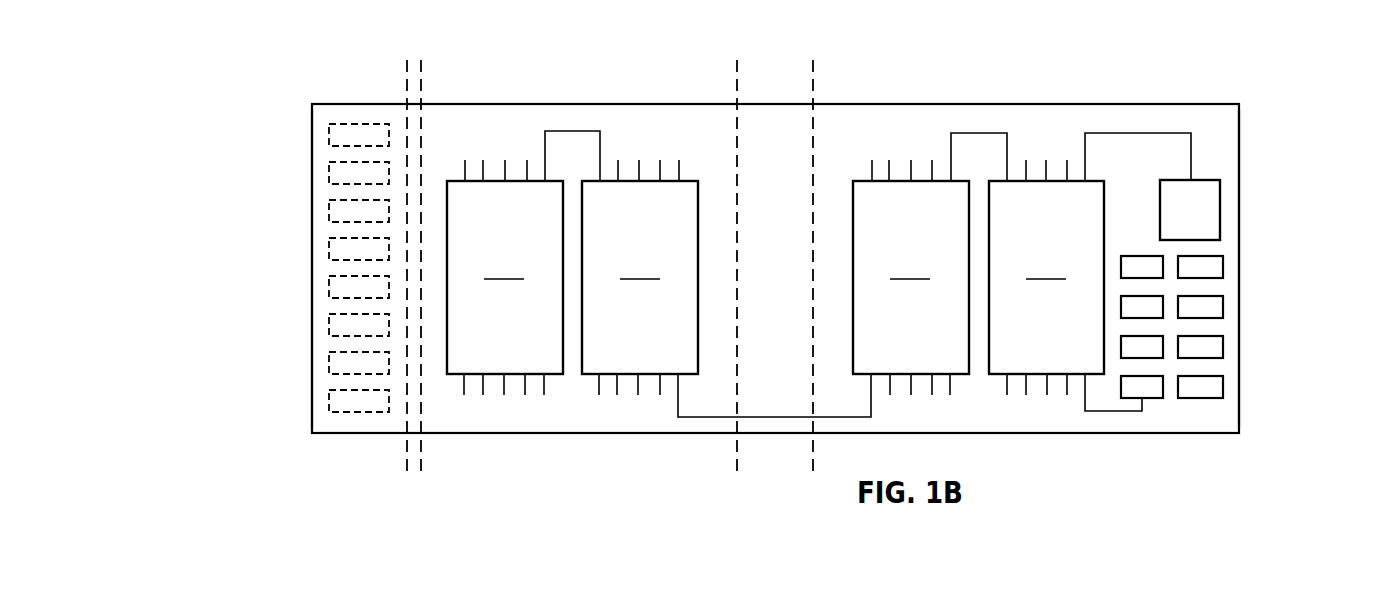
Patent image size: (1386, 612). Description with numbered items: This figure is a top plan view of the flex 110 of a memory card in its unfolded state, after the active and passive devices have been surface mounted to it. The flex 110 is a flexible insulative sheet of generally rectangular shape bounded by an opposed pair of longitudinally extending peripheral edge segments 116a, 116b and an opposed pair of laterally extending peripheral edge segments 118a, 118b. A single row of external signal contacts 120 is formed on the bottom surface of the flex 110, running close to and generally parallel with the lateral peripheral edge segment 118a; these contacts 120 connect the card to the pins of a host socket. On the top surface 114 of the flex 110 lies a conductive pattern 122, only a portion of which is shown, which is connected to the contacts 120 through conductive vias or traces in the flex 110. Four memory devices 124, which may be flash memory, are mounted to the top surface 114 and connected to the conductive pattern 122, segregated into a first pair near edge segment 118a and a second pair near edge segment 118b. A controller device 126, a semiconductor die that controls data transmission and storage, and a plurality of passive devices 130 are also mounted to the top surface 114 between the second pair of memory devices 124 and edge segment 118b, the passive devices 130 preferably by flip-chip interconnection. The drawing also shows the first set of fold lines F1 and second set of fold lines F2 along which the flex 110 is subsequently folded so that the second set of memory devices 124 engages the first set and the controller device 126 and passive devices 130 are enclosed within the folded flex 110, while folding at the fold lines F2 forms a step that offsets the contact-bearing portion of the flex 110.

The flex 110 is at (1072, 104).
The top surface 114 is at (918, 120).
The longitudinally extending peripheral edge segment 116a is at (616, 103).
The longitudinally extending peripheral edge segment 116b is at (1206, 434).
The lateral peripheral edge segment 118a is at (300, 269).
The lateral peripheral edge segment 118b is at (1206, 269).
The external signal contacts 120 is at (338, 173).
The conductive pattern 122 is at (700, 418).
The memory devices 124 is at (775, 263).
The controller device 126 is at (1210, 207).
The passive devices 130 is at (1212, 306).
The first set of fold lines F1 is at (813, 82).
The second set of fold lines F2 is at (405, 82).